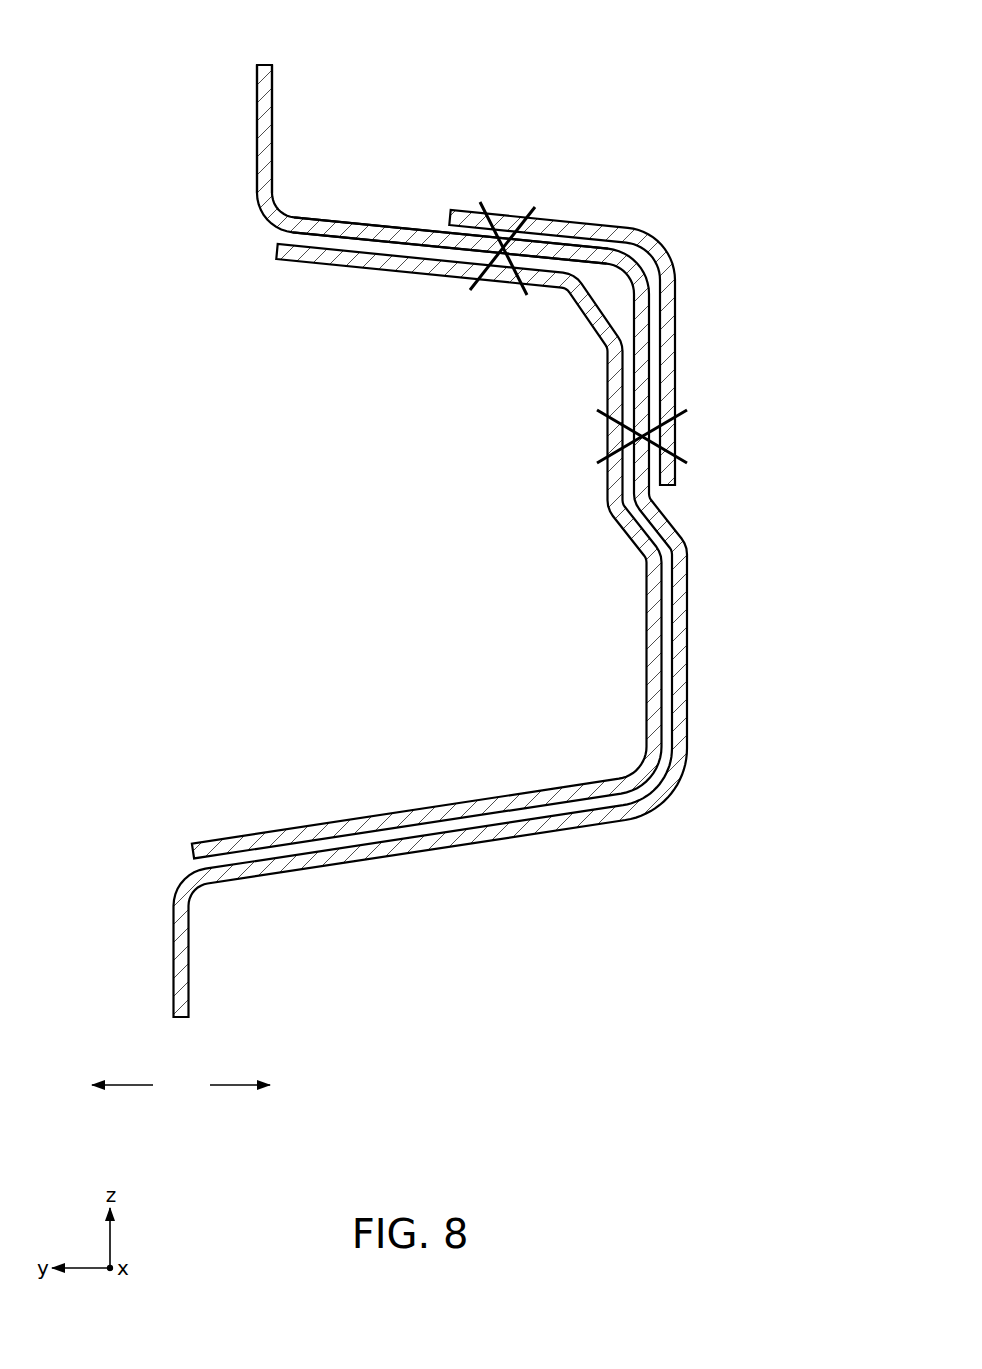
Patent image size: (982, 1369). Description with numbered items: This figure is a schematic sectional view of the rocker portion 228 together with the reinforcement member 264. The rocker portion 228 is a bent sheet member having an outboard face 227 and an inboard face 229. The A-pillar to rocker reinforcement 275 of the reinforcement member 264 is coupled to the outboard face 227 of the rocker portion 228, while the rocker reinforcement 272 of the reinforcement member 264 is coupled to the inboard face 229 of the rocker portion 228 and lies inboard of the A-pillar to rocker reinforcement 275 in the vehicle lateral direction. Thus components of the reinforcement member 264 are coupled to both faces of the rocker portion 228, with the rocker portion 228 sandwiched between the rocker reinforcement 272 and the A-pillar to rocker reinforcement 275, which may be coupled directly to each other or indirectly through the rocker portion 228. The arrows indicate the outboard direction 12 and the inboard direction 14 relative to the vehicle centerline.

The rocker portion 228 is at (307, 100).
The inboard face 229 is at (256, 123).
The outboard face 227 is at (273, 173).
The reinforcement member 264 is at (472, 471).
The rocker reinforcement 272 is at (398, 271).
The A-pillar to rocker reinforcement 275 is at (676, 394).
The direction 12 is at (235, 1085).
The direction 14 is at (128, 1085).